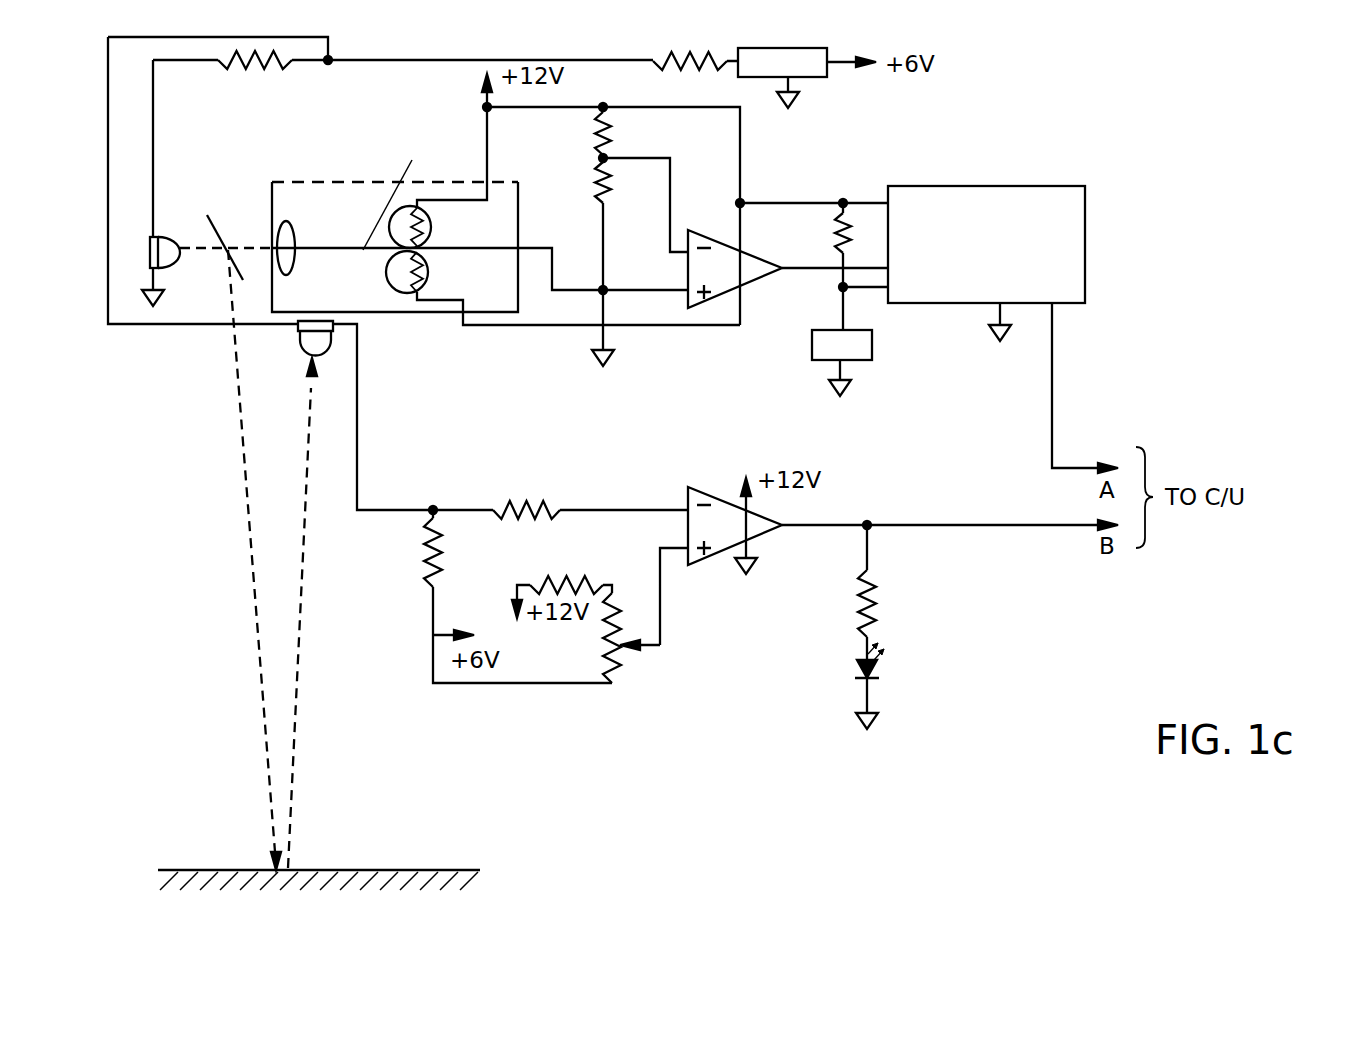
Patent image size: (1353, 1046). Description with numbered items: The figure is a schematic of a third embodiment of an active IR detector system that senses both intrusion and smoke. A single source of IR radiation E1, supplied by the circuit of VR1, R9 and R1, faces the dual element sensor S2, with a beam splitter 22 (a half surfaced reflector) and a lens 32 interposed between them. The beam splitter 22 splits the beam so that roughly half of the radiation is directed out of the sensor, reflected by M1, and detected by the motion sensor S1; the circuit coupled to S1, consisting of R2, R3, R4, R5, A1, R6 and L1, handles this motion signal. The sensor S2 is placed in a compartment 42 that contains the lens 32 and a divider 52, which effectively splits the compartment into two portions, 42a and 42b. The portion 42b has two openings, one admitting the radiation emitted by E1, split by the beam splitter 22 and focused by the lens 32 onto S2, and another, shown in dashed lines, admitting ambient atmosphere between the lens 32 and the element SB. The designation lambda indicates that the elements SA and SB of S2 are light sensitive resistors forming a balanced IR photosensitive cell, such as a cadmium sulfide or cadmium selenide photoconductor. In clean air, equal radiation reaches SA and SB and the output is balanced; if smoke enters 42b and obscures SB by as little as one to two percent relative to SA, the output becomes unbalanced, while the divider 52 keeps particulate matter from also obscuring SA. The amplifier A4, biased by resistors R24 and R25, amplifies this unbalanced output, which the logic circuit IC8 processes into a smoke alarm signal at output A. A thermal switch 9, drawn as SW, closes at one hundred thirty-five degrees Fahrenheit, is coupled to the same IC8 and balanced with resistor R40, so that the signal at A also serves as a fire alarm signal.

The beam splitter 22 is at (228, 250).
The lens 32 is at (288, 228).
The compartment 42 is at (395, 271).
The compartment portion 42a is at (363, 294).
The compartment portion 42b is at (363, 224).
The divider 52 is at (404, 197).
The thermal switch 9 is at (858, 363).
The source of IR radiation E1 is at (150, 238).
The IR sensor for motion S1 is at (297, 331).
The dual element sensor S2 is at (512, 239).
The sensor element SA is at (428, 270).
The sensor element SB is at (432, 232).
The resistor R1 is at (255, 75).
The resistor R9 is at (690, 47).
The voltage regulator VR1 is at (782, 78).
The resistor R25 is at (627, 132).
The resistor R24 is at (627, 180).
The amplifier A4 is at (735, 269).
The resistor R40 is at (839, 264).
The thermal switch SW is at (872, 342).
The logic circuit IC8 is at (986, 263).
The resistor R3 is at (526, 498).
The resistor R2 is at (414, 552).
The resistor R4 is at (566, 572).
The resistor R5 is at (632, 638).
The amplifier A1 is at (735, 526).
The resistor R6 is at (884, 592).
The indicator L1 is at (881, 686).
The reflector M1 is at (470, 887).